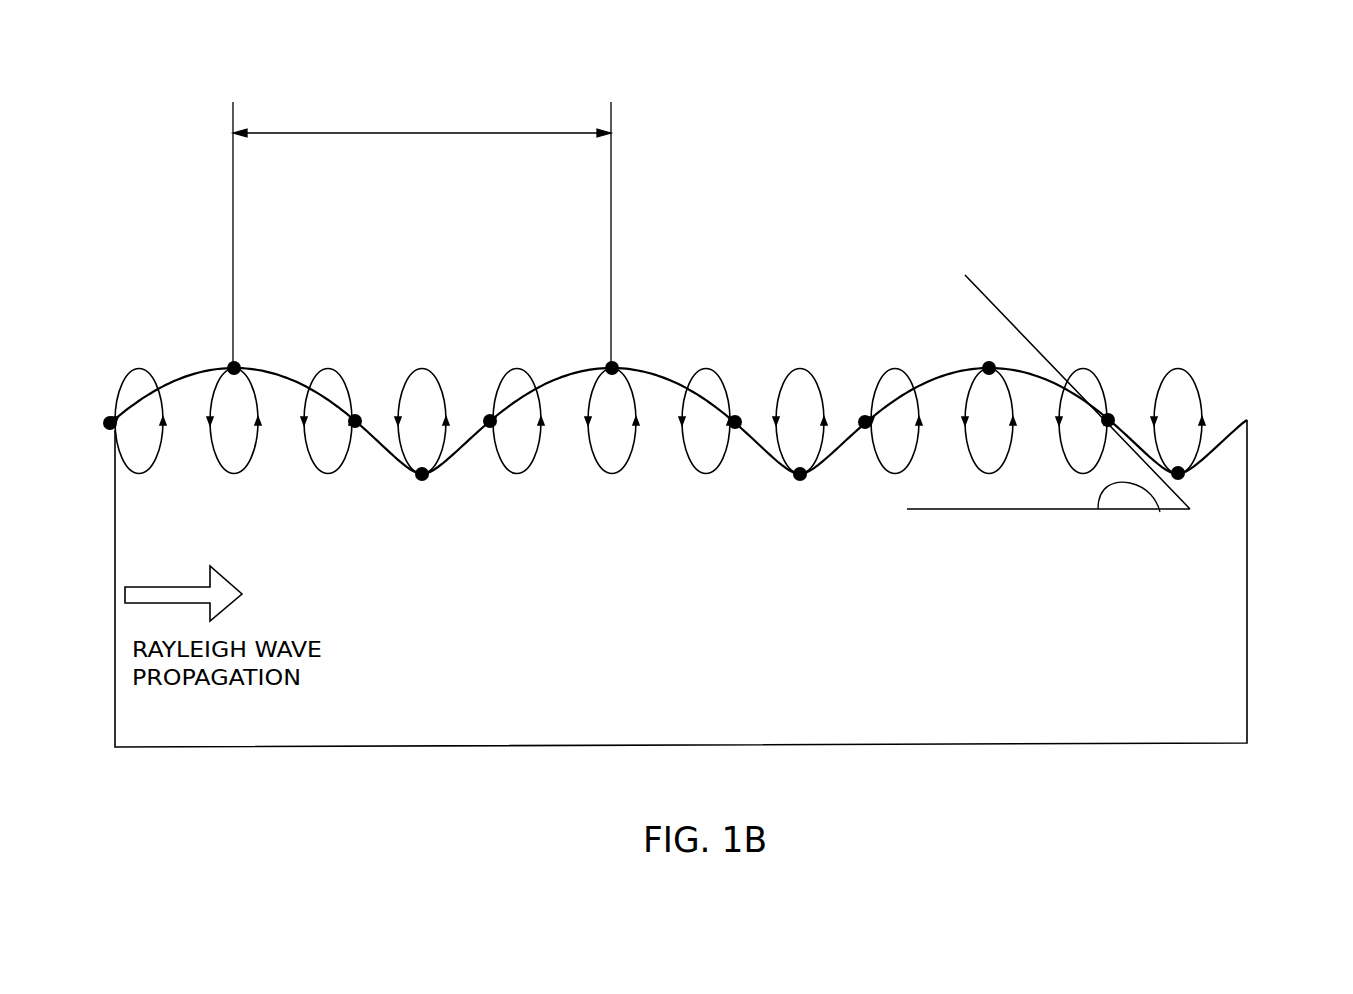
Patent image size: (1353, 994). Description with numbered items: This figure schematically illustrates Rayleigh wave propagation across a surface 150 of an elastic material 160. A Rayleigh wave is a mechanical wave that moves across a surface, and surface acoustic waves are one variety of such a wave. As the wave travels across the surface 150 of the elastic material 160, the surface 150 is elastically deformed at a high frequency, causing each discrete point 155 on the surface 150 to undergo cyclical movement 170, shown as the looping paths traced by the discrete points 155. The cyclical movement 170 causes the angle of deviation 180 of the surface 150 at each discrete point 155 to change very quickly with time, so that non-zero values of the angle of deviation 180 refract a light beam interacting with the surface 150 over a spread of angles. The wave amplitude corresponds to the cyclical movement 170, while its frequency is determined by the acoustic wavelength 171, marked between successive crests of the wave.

The surface 150 is at (567, 373).
The discrete points 155 is at (108, 420).
The elastic material 160 is at (1190, 612).
The cyclical movement 170 is at (139, 367).
The acoustic wavelength 171 is at (412, 133).
The angle of deviation 180 is at (1160, 512).